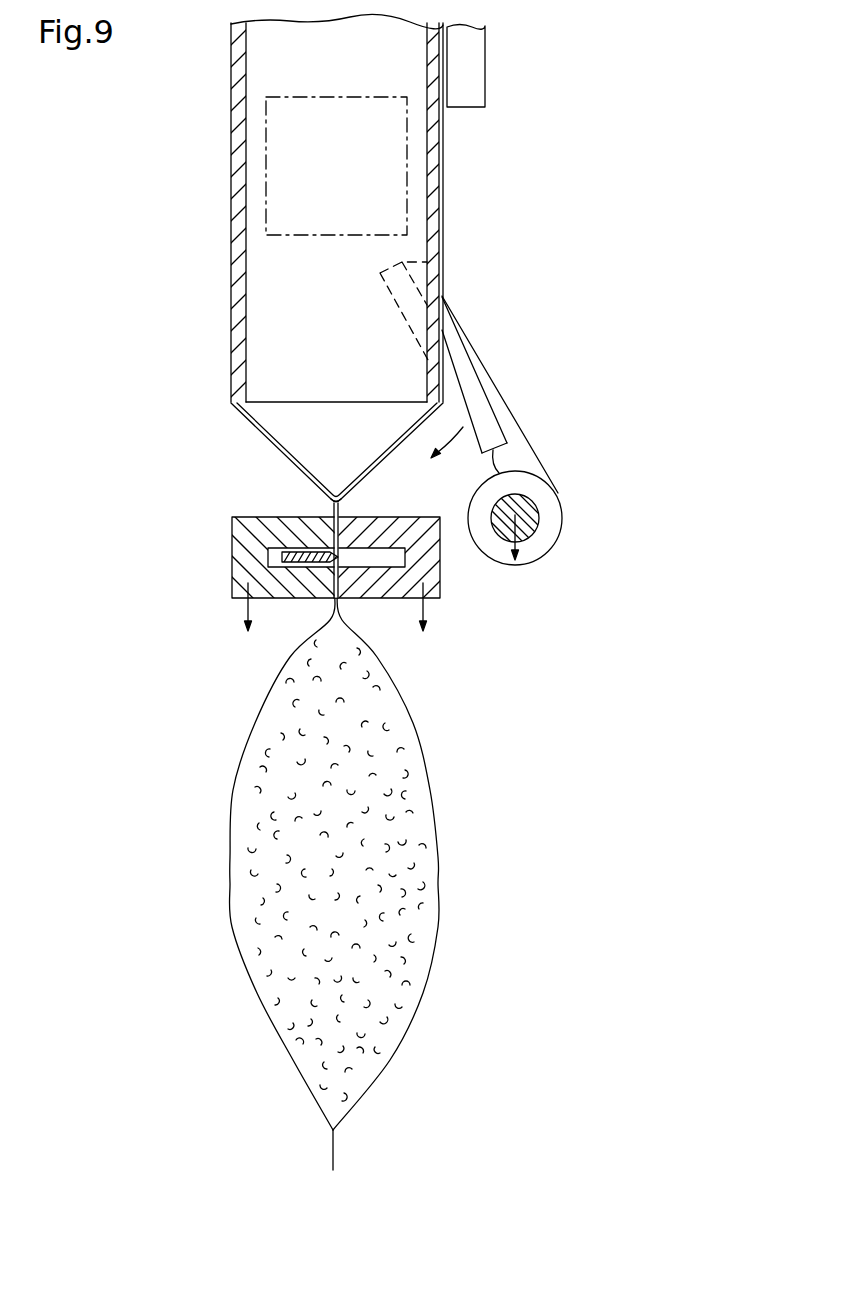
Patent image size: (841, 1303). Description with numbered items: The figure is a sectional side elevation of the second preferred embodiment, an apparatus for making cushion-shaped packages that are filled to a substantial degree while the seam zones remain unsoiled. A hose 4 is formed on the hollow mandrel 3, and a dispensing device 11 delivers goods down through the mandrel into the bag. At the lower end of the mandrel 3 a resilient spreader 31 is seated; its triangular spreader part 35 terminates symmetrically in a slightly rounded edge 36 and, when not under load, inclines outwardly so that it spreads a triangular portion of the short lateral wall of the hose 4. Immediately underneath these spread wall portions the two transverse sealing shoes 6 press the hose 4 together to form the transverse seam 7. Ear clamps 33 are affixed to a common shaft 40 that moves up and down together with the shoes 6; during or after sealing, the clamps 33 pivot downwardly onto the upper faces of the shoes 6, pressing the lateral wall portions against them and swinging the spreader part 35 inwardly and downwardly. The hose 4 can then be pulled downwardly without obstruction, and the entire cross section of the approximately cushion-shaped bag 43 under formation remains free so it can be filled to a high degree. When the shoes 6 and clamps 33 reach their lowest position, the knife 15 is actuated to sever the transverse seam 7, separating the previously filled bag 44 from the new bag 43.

The hollow mandrel 3 is at (432, 172).
The hose 4 is at (443, 218).
The transverse sealing shoes 6 is at (247, 535).
The transverse seam 7 is at (350, 521).
The dispensing device 11 is at (266, 182).
The knife 15 is at (287, 560).
The spreader 31 is at (248, 429).
The ear clamps 33 is at (460, 388).
The spreader part 35 is at (315, 453).
The rounded edge 36 is at (328, 496).
The common shaft 40 is at (530, 518).
The cushion-shaped bag 43 is at (232, 280).
The filled bag 44 is at (230, 864).